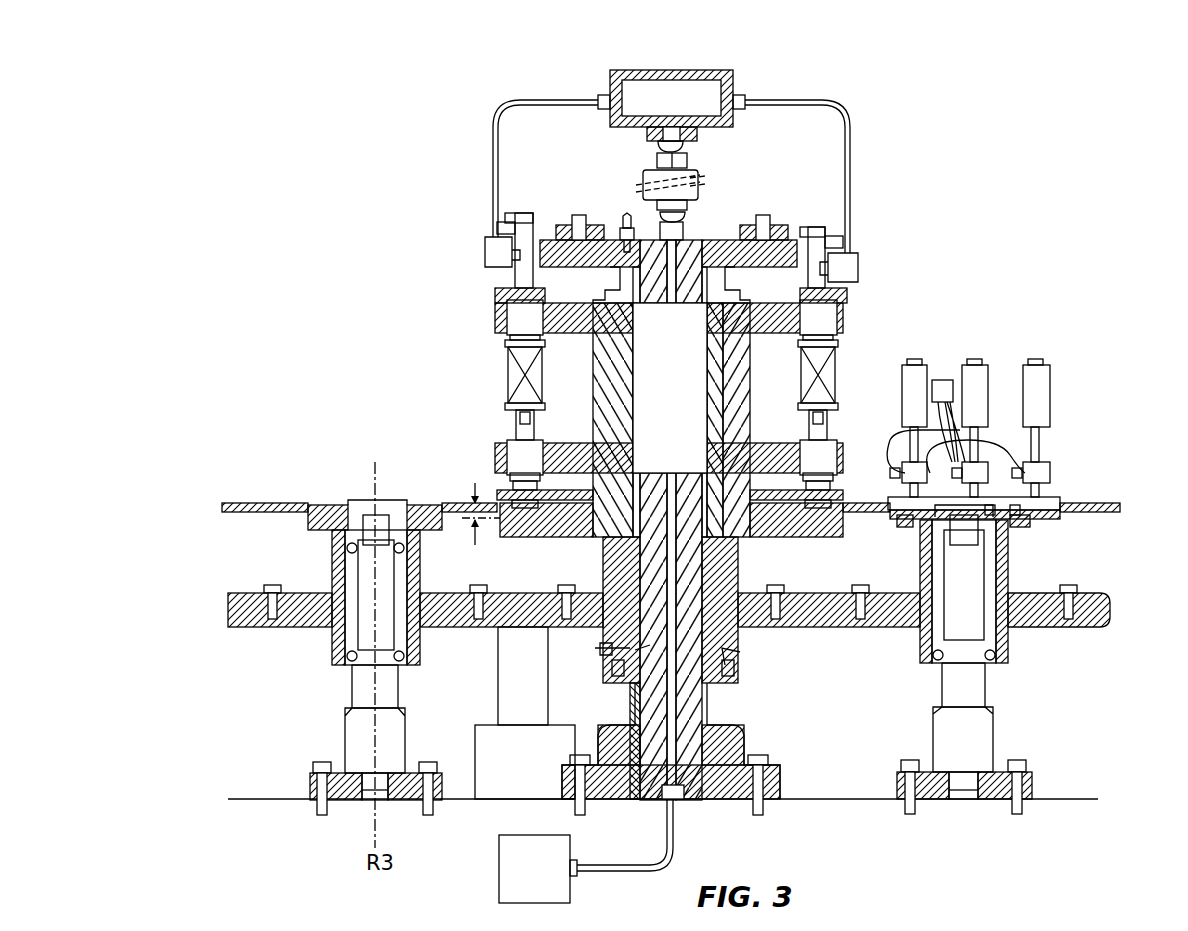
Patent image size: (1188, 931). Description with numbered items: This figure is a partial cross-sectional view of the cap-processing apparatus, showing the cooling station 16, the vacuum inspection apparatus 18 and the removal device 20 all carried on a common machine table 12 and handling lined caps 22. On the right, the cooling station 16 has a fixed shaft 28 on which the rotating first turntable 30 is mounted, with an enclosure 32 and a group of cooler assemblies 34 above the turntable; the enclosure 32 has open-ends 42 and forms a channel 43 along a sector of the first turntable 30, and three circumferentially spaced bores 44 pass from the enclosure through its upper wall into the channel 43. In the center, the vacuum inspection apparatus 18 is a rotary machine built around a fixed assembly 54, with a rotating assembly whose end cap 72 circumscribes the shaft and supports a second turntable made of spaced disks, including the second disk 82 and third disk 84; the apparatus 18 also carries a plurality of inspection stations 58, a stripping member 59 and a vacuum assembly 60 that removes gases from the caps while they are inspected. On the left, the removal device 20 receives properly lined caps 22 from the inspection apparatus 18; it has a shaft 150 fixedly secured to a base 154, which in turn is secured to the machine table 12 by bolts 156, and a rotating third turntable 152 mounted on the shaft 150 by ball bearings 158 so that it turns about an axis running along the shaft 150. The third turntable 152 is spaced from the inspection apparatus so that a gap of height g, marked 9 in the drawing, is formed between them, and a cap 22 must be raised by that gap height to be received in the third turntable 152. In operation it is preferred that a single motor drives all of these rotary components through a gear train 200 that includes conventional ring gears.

The machine table 12 is at (1062, 800).
The cooling station 16 is at (1058, 330).
The vacuum inspection apparatus 18 is at (897, 148).
The removal device 20 is at (312, 380).
The lined caps 22 is at (525, 478).
The shaft 28 is at (985, 693).
The rotating first turntable 30 is at (1105, 506).
The enclosure 32 is at (1052, 497).
The cooler assemblies 34 is at (1037, 360).
The open-ends 42 is at (1065, 510).
The channel 43 is at (925, 505).
The bores 44 is at (910, 497).
The fixed assembly 54 is at (745, 725).
The inspection stations 58 is at (838, 380).
The stripping member 59 is at (500, 525).
The vacuum assembly 60 is at (742, 58).
The end cap 72 is at (740, 680).
The second disk 82 is at (498, 680).
The third disk 84 is at (475, 748).
The gap dimension 9 is at (477, 508).
The shaft 150 is at (352, 690).
The rotating third turntable 152 is at (270, 503).
The base 154 is at (345, 760).
The bolts 156 is at (313, 766).
The ball bearings 158 is at (345, 656).
The gear train 200 is at (1130, 590).